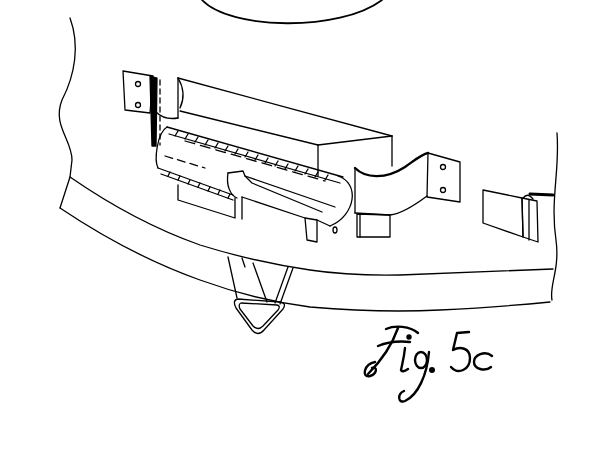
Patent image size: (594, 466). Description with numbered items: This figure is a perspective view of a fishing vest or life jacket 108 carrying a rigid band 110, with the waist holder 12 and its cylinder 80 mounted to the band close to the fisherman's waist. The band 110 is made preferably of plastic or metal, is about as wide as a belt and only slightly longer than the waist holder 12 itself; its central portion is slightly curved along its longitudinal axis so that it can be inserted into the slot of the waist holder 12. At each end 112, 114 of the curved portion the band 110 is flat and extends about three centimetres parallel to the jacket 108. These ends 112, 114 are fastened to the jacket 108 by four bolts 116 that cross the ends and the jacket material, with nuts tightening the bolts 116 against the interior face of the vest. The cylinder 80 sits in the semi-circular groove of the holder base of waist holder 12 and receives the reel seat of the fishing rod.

The waist holder 12 is at (278, 99).
The cylinder 80 is at (183, 160).
The life jacket 108 is at (119, 260).
The rigid band 110 is at (387, 195).
The first end of band 112 is at (141, 69).
The second end of band 114 is at (446, 156).
The bolts 116 is at (135, 105).